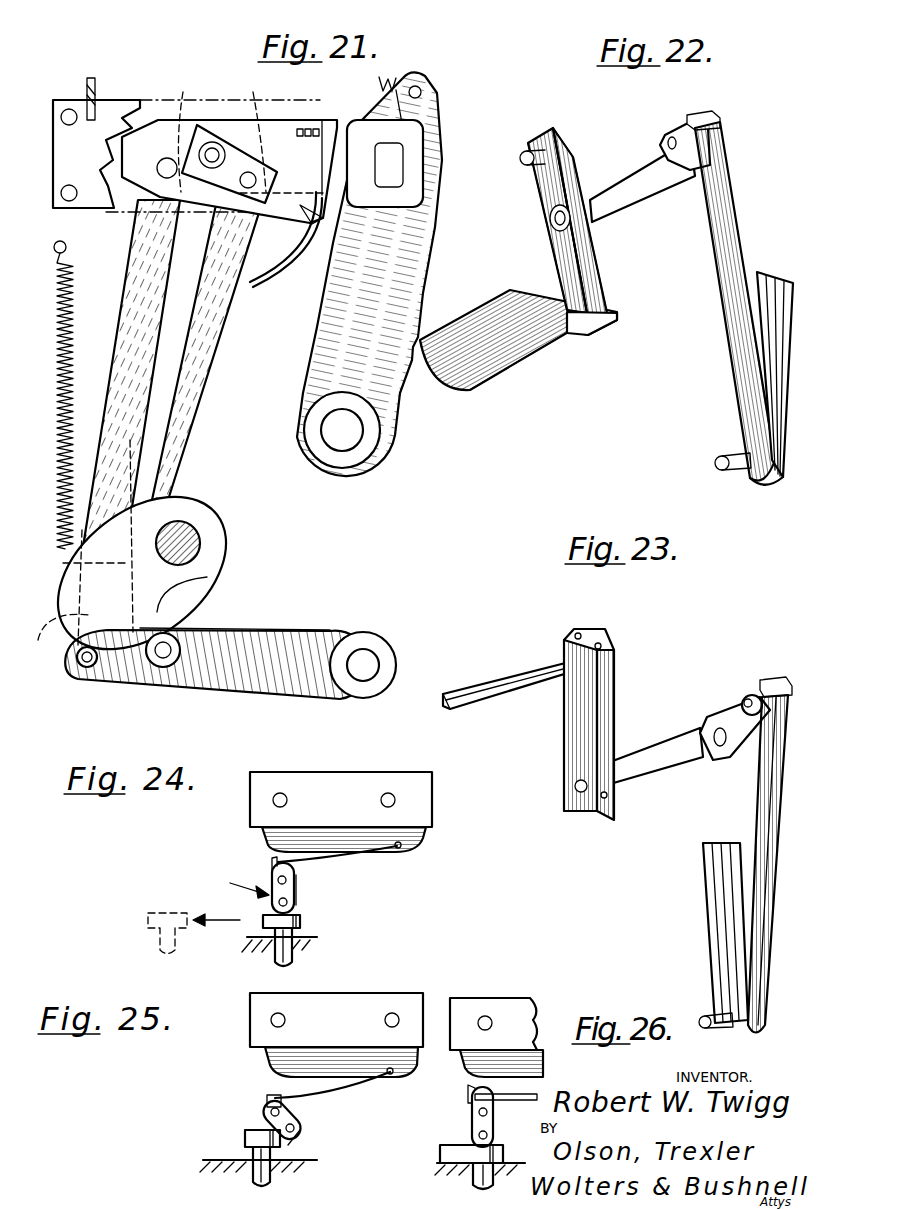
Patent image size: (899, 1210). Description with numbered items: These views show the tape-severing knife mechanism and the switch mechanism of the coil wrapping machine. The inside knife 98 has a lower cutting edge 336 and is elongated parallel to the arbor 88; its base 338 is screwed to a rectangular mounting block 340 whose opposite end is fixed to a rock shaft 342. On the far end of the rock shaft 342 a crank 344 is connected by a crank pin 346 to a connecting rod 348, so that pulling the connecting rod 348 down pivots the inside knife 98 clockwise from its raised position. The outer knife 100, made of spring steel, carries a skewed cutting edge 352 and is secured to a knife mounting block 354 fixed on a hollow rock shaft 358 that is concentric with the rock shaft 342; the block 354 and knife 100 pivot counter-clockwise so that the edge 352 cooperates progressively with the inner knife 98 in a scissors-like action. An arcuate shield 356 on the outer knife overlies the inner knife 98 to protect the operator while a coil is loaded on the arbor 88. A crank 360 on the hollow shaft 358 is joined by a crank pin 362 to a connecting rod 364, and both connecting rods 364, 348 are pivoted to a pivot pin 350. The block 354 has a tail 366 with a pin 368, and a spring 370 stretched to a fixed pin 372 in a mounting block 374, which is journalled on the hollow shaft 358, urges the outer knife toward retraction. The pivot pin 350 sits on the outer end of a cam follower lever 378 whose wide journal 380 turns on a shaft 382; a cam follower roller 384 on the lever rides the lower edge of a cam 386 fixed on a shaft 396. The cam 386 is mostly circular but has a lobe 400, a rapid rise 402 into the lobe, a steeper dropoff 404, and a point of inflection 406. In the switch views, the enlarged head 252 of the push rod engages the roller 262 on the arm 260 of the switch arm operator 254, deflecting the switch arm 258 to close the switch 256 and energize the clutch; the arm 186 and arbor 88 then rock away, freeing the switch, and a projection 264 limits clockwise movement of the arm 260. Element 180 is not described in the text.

In FIG. 21, the arbor 88 is at (395, 160).
In FIG. 21, the inside knife 98 is at (293, 220).
In FIG. 23, the inside knife 98 is at (509, 668).
In FIG. 22, the outer knife 100 is at (537, 343).
In FIG. 26, the floor 180 is at (437, 1172).
In FIG. 21, the arm 186 is at (410, 250).
In FIG. 24, the enlarged head 252 is at (155, 912).
In FIG. 25, the enlarged head 252 is at (245, 1138).
In FIG. 26, the enlarged head 252 is at (440, 1160).
In FIG. 24, the switch arm operator 254 is at (226, 882).
In FIG. 24, the switch 256 is at (338, 782).
In FIG. 25, the switch 256 is at (355, 1005).
In FIG. 26, the switch 256 is at (500, 1005).
In FIG. 24, the switch arm 258 is at (375, 862).
In FIG. 25, the switch arm 258 is at (343, 1093).
In FIG. 24, the arm 260 is at (292, 888).
In FIG. 25, the arm 260 is at (295, 1118).
In FIG. 26, the arm 260 is at (471, 1124).
In FIG. 24, the roller 262 is at (293, 905).
In FIG. 25, the roller 262 is at (285, 1148).
In FIG. 24, the projection 264 is at (271, 859).
In FIG. 25, the projection 264 is at (262, 1105).
In FIG. 26, the projection 264 is at (467, 1091).
In FIG. 23, the lower cutting edge 336 is at (484, 708).
In FIG. 23, the base 338 is at (598, 637).
In FIG. 21, the mounting block 340 is at (318, 98).
In FIG. 23, the mounting block 340 is at (600, 700).
In FIG. 23, the rock shaft 342 is at (660, 753).
In FIG. 21, the crank 344 is at (257, 96).
In FIG. 23, the crank 344 is at (720, 712).
In FIG. 23, the crank pin 346 is at (740, 697).
In FIG. 21, the connecting rod 348 is at (197, 363).
In FIG. 22, the connecting rod 348 is at (773, 280).
In FIG. 23, the connecting rod 348 is at (762, 807).
In FIG. 22, the pivot pin 350 is at (723, 457).
In FIG. 23, the pivot pin 350 is at (707, 1013).
In FIG. 22, the cutting edge 352 is at (508, 370).
In FIG. 21, the knife mounting block 354 is at (379, 80).
In FIG. 22, the knife mounting block 354 is at (590, 296).
In FIG. 21, the shield 356 is at (272, 285).
In FIG. 22, the shield 356 is at (450, 370).
In FIG. 22, the hollow rock shaft 358 is at (605, 190).
In FIG. 21, the crank 360 is at (240, 130).
In FIG. 22, the crank 360 is at (664, 150).
In FIG. 22, the crank pin 362 is at (670, 137).
In FIG. 21, the connecting rod 364 is at (137, 307).
In FIG. 22, the connecting rod 364 is at (770, 187).
In FIG. 23, the connecting rod 364 is at (710, 870).
In FIG. 22, the tail 366 is at (550, 190).
In FIG. 22, the pin 368 is at (523, 156).
In FIG. 21, the spring 370 is at (137, 150).
In FIG. 21, the fixed pin 372 is at (91, 90).
In FIG. 21, the mounting block 374 is at (107, 207).
In FIG. 21, the cam follower lever 378 is at (294, 640).
In FIG. 21, the journal 380 is at (373, 643).
In FIG. 21, the shaft 382 is at (350, 655).
In FIG. 21, the cam follower roller 384 is at (167, 667).
In FIG. 21, the cam 386 is at (207, 510).
In FIG. 21, the shaft 396 is at (200, 540).
In FIG. 21, the lobe 400 is at (207, 578).
In FIG. 21, the cam rise 402 is at (190, 617).
In FIG. 21, the dropoff 404 is at (77, 657).
In FIG. 21, the point of inflection 406 is at (63, 563).